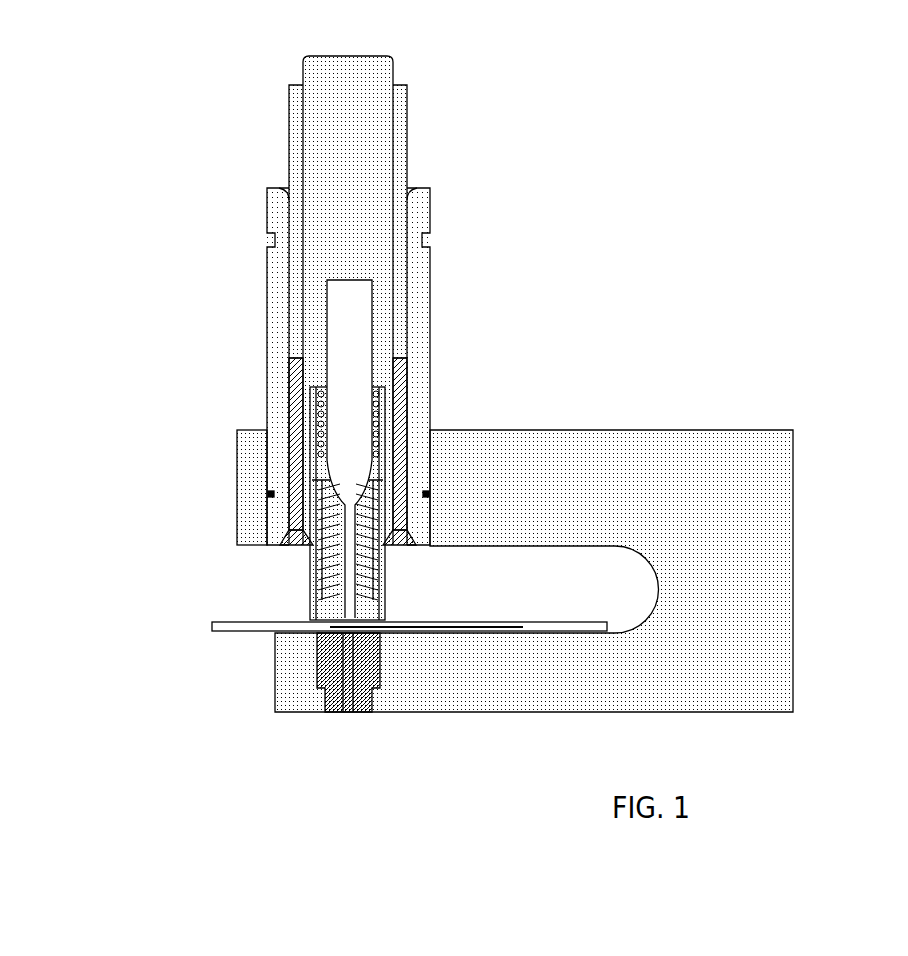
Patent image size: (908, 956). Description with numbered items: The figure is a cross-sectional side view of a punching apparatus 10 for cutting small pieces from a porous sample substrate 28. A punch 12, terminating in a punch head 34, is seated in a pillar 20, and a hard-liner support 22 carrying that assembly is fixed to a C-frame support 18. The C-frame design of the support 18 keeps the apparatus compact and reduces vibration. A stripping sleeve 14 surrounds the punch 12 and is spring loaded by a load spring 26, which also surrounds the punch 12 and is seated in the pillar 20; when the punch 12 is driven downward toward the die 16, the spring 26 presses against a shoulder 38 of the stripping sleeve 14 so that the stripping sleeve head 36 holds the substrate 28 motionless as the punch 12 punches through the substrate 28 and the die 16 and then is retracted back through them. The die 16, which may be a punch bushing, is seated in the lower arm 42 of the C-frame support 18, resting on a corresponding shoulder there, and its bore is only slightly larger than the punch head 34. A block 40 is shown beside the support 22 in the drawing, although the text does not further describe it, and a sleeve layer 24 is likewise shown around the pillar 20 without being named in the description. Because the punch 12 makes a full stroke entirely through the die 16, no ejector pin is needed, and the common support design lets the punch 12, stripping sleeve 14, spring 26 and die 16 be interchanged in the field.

The apparatus 10 is at (692, 200).
The punch 12 is at (360, 366).
The stripping sleeve 14 is at (380, 492).
The die 16 is at (375, 680).
The C-frame support 18 is at (794, 553).
The pillar 20 is at (362, 200).
The hard-liner support 22 is at (423, 281).
The inner sleeve 24 is at (403, 232).
The load spring 26 is at (375, 532).
The substrate 28 is at (258, 622).
The punch head 34 is at (328, 626).
The stripping sleeve head 36 is at (318, 624).
The shoulder 38 is at (366, 613).
The clamp block 40 is at (237, 472).
The lower arm 42 is at (285, 704).